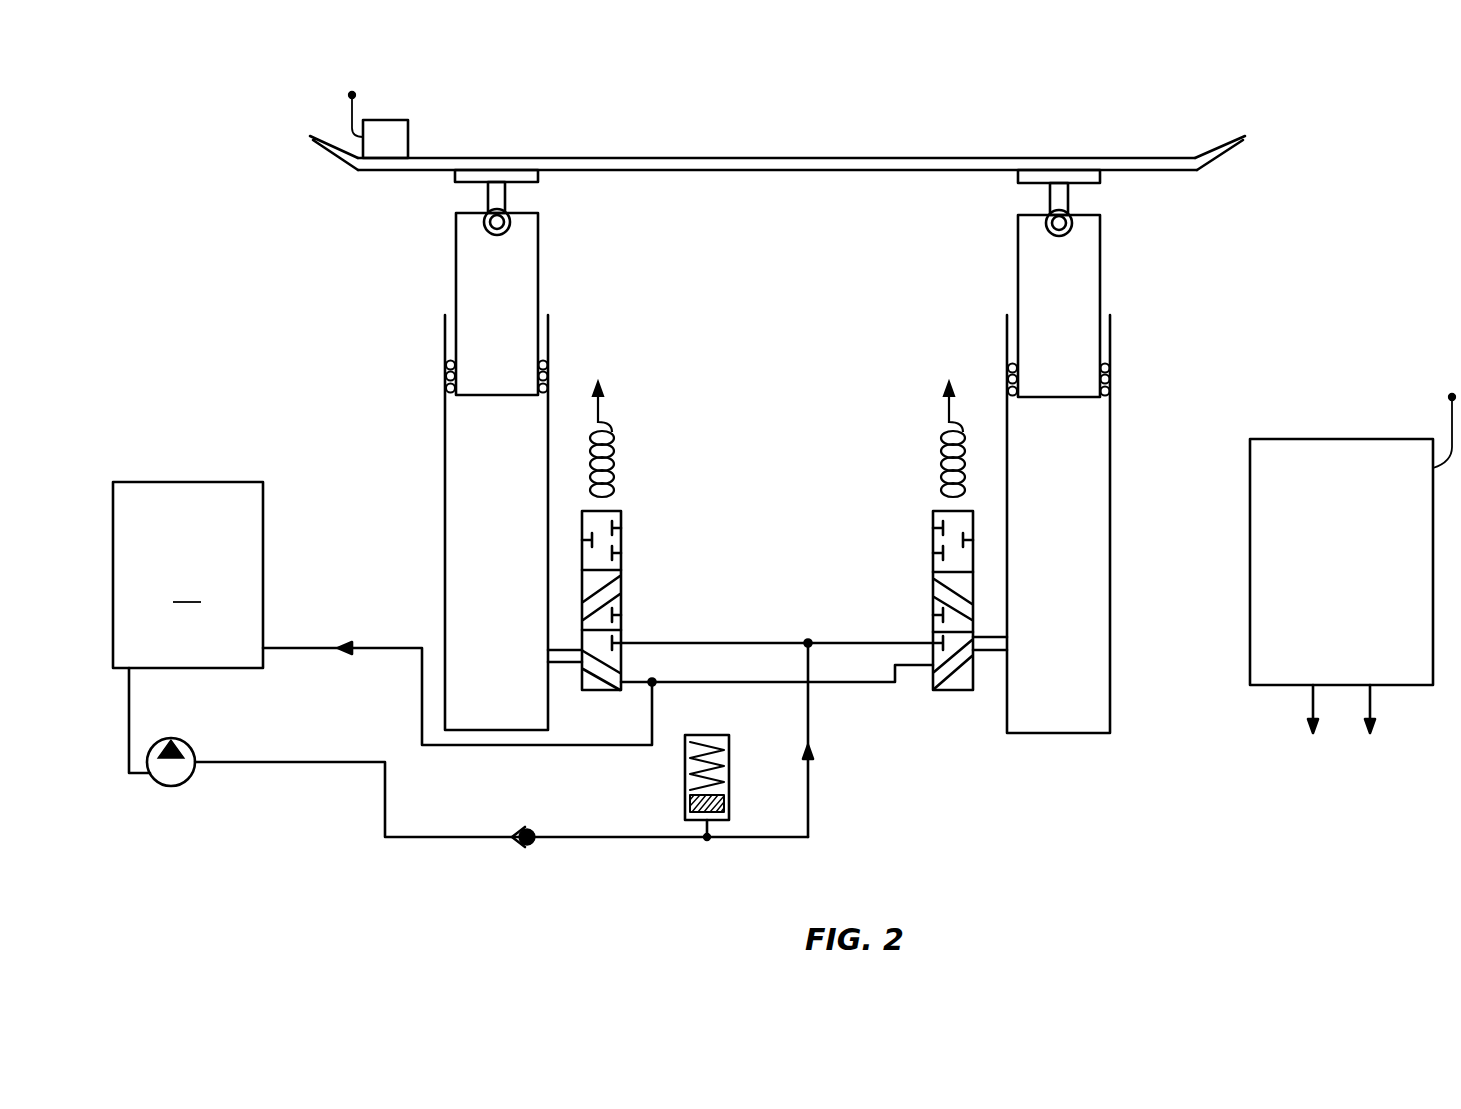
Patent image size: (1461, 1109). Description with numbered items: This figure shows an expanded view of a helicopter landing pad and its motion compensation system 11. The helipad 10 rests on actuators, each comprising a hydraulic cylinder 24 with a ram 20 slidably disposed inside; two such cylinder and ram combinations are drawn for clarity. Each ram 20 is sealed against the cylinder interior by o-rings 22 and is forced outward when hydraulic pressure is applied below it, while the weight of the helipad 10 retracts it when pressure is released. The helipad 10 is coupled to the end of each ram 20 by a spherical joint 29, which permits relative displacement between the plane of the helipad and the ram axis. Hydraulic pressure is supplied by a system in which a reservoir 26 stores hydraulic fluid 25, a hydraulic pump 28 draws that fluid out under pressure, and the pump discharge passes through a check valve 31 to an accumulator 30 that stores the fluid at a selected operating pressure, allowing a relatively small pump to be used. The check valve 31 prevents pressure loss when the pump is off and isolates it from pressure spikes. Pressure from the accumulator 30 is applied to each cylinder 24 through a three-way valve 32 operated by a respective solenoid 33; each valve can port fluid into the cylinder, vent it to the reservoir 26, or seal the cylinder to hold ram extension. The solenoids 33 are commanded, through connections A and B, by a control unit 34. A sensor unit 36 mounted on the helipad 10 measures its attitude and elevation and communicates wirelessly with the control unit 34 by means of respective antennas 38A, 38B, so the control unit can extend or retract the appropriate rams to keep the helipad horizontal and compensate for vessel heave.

The helipad 10 is at (808, 158).
The motion compensation system 11 is at (1334, 148).
The ram 20 is at (530, 262).
The o-rings 22 is at (448, 372).
The hydraulic cylinder 24 is at (445, 478).
The hydraulic fluid 25 is at (190, 587).
The reservoir 26 is at (188, 557).
The hydraulic pump 28 is at (173, 740).
The spherical joint 29 is at (488, 206).
The accumulator 30 is at (685, 778).
The check valve 31 is at (532, 848).
The three-way valve 32 is at (622, 600).
The solenoid 33 is at (614, 468).
The control unit 34 is at (1250, 561).
The sensor unit 36 is at (389, 120).
The antenna 38A is at (352, 95).
The antenna 38B is at (1452, 397).